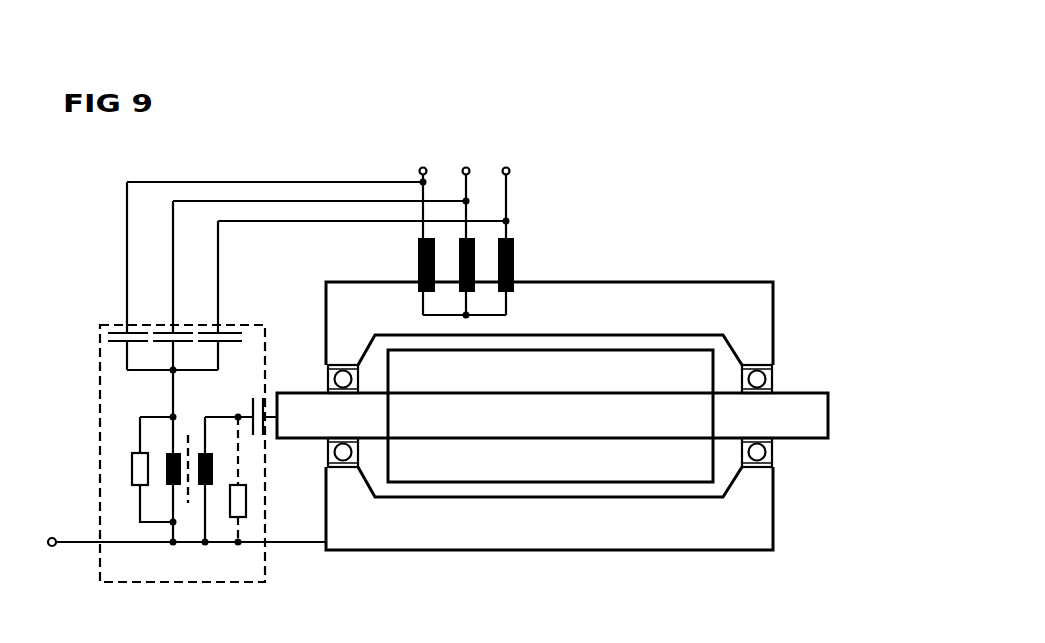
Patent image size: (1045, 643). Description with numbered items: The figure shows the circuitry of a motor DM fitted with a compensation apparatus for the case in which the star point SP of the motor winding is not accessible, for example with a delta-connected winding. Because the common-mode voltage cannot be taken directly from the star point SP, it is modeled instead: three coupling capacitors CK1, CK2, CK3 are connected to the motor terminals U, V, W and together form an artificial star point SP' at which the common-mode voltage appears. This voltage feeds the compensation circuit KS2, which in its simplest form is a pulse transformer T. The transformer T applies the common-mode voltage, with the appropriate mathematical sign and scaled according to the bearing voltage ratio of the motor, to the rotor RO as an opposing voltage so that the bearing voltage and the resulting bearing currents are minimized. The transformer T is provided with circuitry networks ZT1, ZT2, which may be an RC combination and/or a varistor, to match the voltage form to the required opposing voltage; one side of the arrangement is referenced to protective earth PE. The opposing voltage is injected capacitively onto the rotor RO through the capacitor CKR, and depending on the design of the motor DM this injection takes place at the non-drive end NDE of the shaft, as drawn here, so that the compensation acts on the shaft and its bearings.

The compensation circuit KS2 is at (108, 325).
The coupling capacitor CK1 is at (110, 341).
The coupling capacitor CK2 is at (162, 330).
The coupling capacitor CK3 is at (230, 330).
The star point SP' is at (162, 392).
The capacitor CKR is at (248, 400).
The circuitry network ZT1 is at (130, 470).
The circuitry network ZT2 is at (247, 503).
The pulse transformer T is at (191, 478).
The protective earth PE is at (187, 561).
The motor terminal U is at (281, 226).
The motor terminal V is at (324, 226).
The motor terminal W is at (367, 226).
The star point SP is at (506, 312).
The motor DM is at (757, 246).
The non-drive end NDE is at (316, 415).
The rotor RO is at (663, 370).